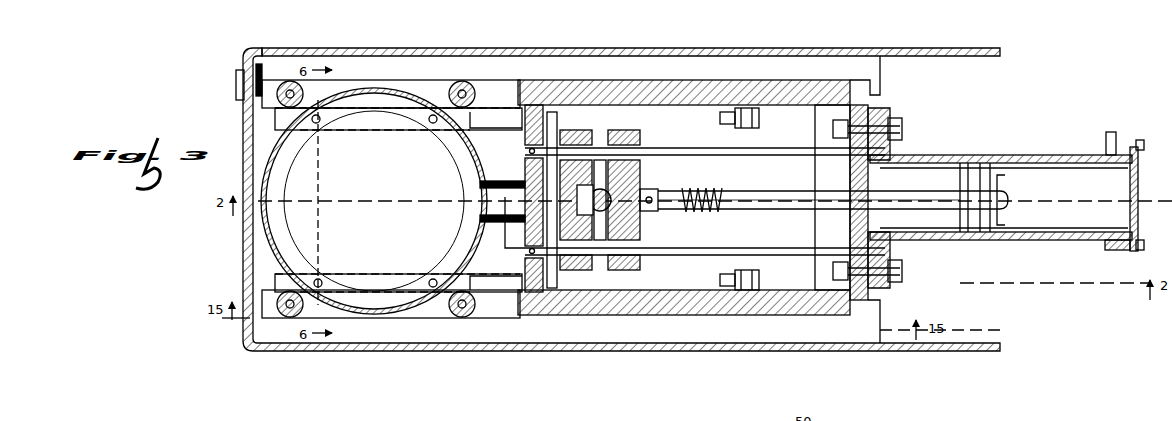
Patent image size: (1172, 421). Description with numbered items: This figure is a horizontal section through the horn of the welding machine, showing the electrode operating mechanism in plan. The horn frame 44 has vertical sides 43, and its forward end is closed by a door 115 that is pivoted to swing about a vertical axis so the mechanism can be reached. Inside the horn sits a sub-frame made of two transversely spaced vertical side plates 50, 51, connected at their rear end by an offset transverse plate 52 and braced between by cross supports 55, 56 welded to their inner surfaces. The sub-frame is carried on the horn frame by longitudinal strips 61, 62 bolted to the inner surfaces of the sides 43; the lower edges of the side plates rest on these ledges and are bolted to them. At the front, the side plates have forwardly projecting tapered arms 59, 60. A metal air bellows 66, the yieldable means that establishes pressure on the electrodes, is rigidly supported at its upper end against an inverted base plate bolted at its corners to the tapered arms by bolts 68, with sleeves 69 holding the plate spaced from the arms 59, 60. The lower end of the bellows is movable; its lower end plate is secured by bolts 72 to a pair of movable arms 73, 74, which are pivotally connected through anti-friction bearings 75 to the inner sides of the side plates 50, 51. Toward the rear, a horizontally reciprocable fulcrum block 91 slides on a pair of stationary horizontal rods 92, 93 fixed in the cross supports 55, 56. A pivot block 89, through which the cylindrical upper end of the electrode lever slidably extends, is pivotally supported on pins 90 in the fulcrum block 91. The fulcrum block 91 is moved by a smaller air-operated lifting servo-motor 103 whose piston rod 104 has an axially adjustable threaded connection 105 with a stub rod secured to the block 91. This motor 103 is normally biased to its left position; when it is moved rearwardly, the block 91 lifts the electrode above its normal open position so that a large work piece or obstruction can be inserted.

The vertical sides of the horn frame 43 is at (753, 48).
The horn frame 44 is at (371, 48).
The door 115 is at (248, 238).
The tapered arm 60 is at (410, 86).
The tapered arm 59 is at (428, 316).
The bolts 68 is at (290, 80).
The sleeves 69 is at (303, 93).
The metal air bellows 66 is at (348, 86).
The bolts 72 is at (316, 125).
The movable arm 73 is at (487, 112).
The movable arm 74 is at (502, 274).
The cross support 56 is at (528, 154).
The side plate 50 is at (663, 90).
The side plate 51 is at (652, 305).
The stationary horizontal rod 92 is at (669, 150).
The stationary horizontal rod 93 is at (668, 252).
The fulcrum block 91 is at (645, 169).
The pivot block 89 is at (643, 180).
The pins 90 is at (641, 217).
The piston rod 104 is at (778, 198).
The threaded connection 105 is at (696, 186).
The lifting servo-motor 103 is at (1037, 154).
The anti-friction bearings 75 is at (759, 120).
The cross support 55 is at (815, 165).
The offset transverse plate 52 is at (885, 108).
The longitudinal strip 62 is at (880, 68).
The longitudinal strip 61 is at (870, 325).